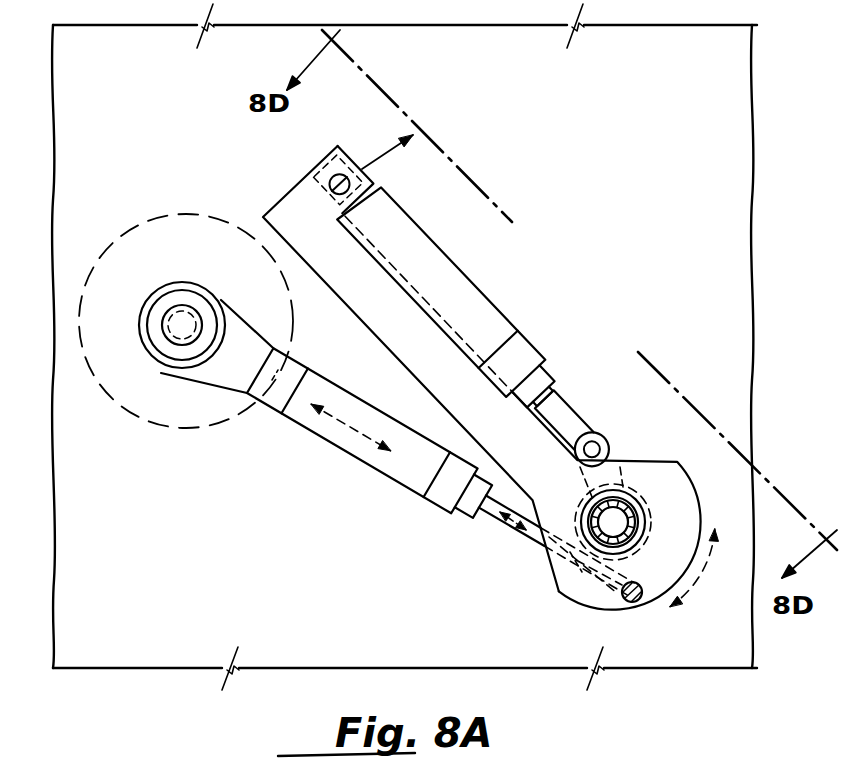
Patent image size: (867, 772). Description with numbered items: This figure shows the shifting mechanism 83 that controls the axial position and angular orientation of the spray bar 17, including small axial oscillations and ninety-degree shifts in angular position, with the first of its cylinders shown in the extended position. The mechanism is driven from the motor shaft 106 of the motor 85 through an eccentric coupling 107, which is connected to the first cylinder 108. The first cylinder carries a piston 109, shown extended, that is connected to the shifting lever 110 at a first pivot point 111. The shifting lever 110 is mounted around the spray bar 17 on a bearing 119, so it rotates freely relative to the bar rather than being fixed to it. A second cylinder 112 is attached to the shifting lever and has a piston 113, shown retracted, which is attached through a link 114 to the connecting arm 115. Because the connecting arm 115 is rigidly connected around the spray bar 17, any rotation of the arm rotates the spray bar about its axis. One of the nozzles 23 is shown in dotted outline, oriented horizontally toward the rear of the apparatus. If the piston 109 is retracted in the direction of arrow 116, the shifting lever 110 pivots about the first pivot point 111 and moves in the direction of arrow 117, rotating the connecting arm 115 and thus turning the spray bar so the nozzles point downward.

The spray bar 17 is at (631, 504).
The nozzle 23 is at (652, 520).
The shifting mechanism 83 is at (513, 307).
The motor 85 is at (231, 422).
The motor shaft 106 is at (186, 318).
The eccentric coupling 107 is at (177, 345).
The first cylinder 108 is at (408, 466).
The piston 109 is at (511, 527).
The shifting lever 110 is at (547, 466).
The first pivot point 111 is at (634, 601).
The second cylinder 112 is at (442, 277).
The piston 113 is at (548, 397).
The link 114 is at (570, 422).
The connecting arm 115 is at (611, 451).
The arrow 116 is at (545, 530).
The arrow 117 is at (373, 152).
The bearing 119 is at (590, 536).